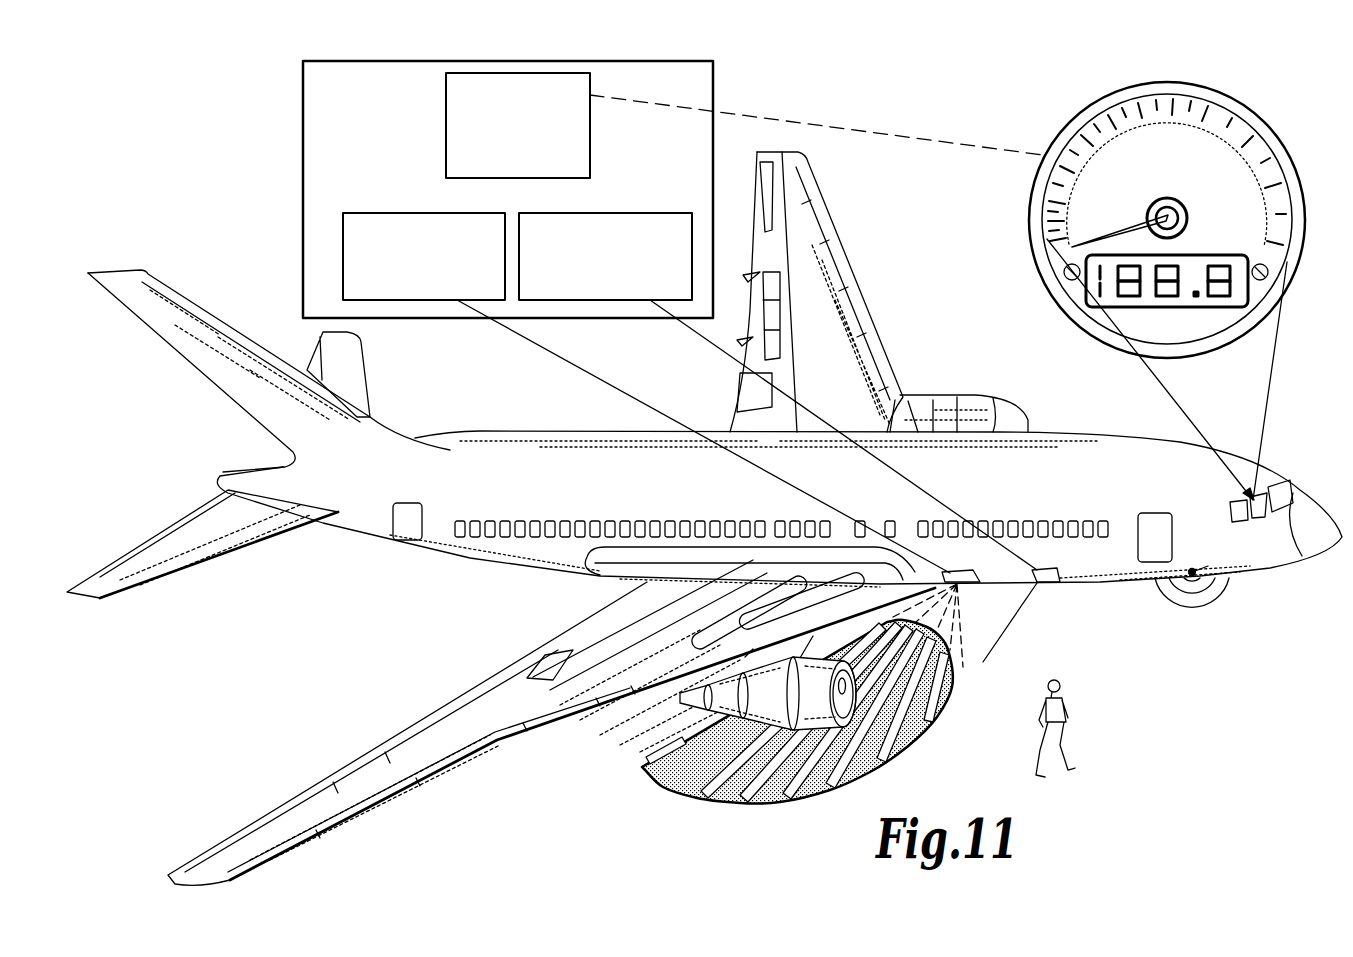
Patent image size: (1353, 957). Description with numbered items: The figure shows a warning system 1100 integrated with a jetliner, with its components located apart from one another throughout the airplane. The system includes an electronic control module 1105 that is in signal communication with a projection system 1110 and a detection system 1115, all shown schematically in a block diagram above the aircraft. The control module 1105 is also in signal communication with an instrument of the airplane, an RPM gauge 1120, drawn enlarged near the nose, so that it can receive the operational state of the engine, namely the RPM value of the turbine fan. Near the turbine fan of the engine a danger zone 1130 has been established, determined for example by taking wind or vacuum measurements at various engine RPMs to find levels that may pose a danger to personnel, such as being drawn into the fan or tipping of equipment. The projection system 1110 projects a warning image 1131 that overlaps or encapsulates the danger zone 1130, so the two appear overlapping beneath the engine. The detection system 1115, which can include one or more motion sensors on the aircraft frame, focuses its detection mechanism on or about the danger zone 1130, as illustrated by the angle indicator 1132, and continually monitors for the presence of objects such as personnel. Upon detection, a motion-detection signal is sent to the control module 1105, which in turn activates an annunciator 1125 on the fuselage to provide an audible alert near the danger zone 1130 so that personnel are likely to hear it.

The warning system 1100 is at (380, 108).
The electronic control module 1105 is at (545, 152).
The projection system 1110 is at (398, 284).
The detection system 1115 is at (632, 284).
The RPM gauge 1120 is at (1063, 132).
The annunciator 1125 is at (1213, 562).
The danger zone 1130 is at (756, 802).
The warning image 1131 is at (945, 720).
The angle indicator 1132 is at (1022, 604).